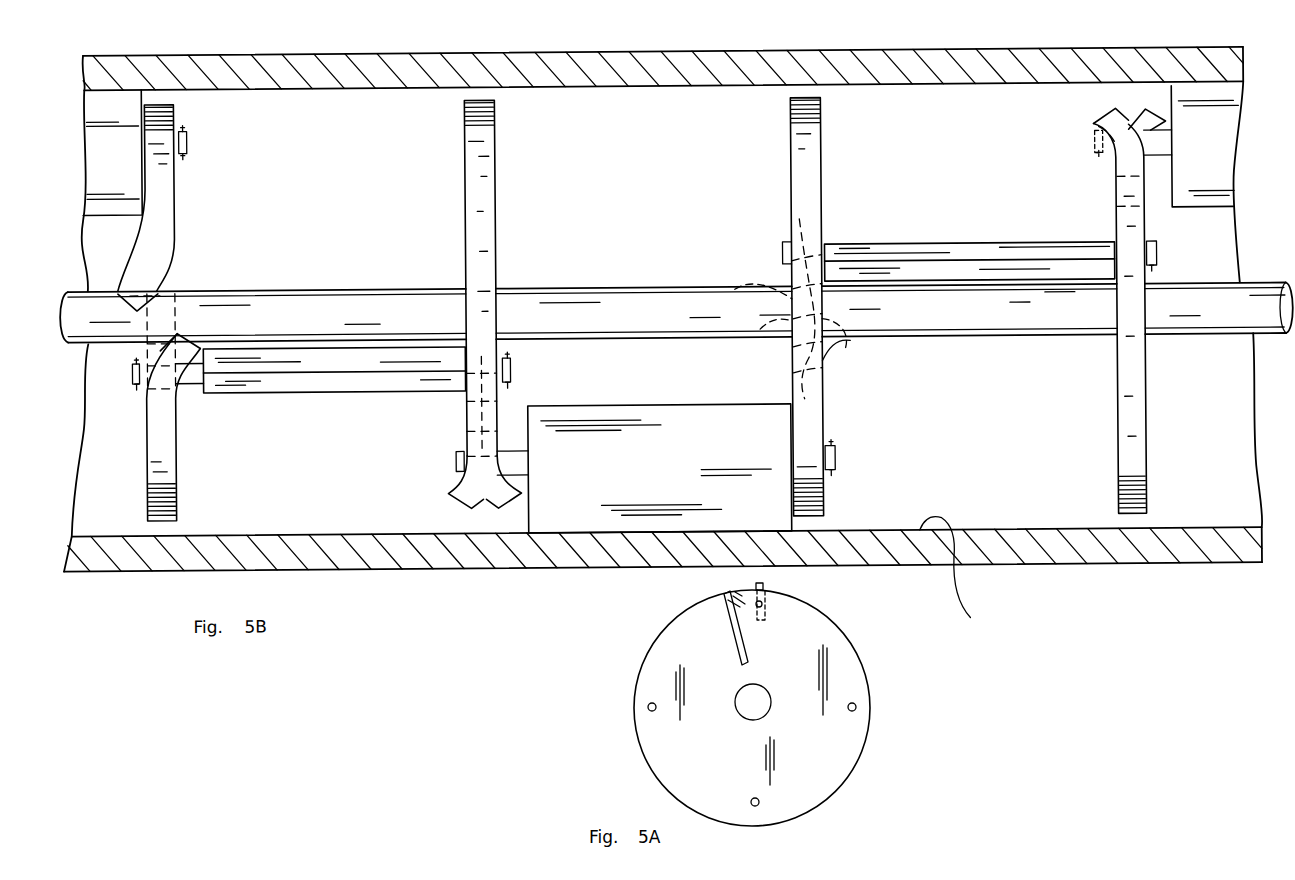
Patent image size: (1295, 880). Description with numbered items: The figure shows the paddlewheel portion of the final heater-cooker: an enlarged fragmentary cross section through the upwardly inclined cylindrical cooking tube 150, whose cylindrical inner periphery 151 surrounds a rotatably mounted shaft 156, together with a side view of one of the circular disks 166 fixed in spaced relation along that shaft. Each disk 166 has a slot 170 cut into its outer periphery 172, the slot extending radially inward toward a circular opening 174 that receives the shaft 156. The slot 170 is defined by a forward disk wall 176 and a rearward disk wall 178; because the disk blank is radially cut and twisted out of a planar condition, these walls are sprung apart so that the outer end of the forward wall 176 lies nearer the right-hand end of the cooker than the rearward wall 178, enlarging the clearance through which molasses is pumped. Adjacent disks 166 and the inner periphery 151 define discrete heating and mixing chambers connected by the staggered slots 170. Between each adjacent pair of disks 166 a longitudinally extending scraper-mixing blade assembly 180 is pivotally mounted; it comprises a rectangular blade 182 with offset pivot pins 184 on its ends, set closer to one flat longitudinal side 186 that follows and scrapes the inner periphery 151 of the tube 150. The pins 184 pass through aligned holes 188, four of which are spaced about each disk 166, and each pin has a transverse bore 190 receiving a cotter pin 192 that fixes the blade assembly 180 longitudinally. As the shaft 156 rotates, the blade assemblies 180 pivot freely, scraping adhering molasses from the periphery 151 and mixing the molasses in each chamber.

In FIG. 5B, the cooking housing or tube 150 is at (872, 52).
In FIG. 5B, the cylindrical inner periphery 151 is at (967, 575).
In FIG. 5B, the shaft 156 is at (1035, 320).
In FIG. 5B, the circular disks 166 is at (180, 229).
In FIG. 5B, the slot 170 is at (158, 314).
In FIG. 5A, the slot 170 is at (727, 592).
In FIG. 5B, the outer periphery 172 is at (170, 520).
In FIG. 5A, the outer periphery 172 is at (665, 625).
In FIG. 5A, the circular opening 174 is at (755, 712).
In FIG. 5B, the forward disk wall 176 is at (187, 332).
In FIG. 5A, the forward disk wall 176 is at (750, 648).
In FIG. 5B, the rearward disk wall 178 is at (110, 286).
In FIG. 5A, the rearward disk wall 178 is at (732, 648).
In FIG. 5B, the scraper-mixing blade assembly 180 is at (348, 391).
In FIG. 5A, the scraper-mixing blade assembly 180 is at (770, 615).
In FIG. 5B, the rectangular blade 182 is at (127, 164).
In FIG. 5B, the pivot pins 184 is at (184, 154).
In FIG. 5B, the flat longitudinal side 186 is at (640, 533).
In FIG. 5A, the flat longitudinal side 186 is at (763, 585).
In FIG. 5A, the holes 188 is at (648, 707).
In FIG. 5B, the transverse bore 190 is at (190, 136).
In FIG. 5A, the transverse bore 190 is at (763, 603).
In FIG. 5B, the cotter pin 192 is at (188, 124).